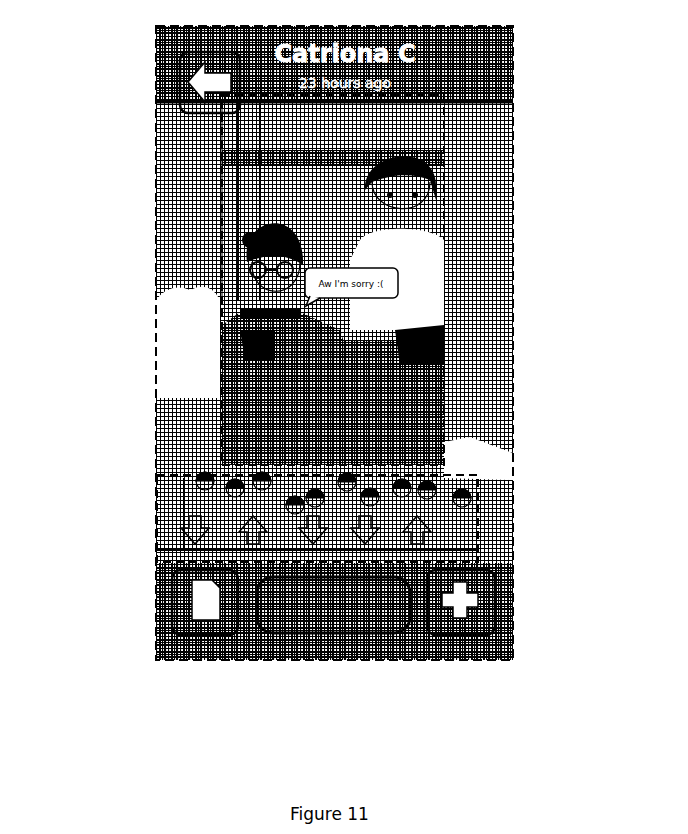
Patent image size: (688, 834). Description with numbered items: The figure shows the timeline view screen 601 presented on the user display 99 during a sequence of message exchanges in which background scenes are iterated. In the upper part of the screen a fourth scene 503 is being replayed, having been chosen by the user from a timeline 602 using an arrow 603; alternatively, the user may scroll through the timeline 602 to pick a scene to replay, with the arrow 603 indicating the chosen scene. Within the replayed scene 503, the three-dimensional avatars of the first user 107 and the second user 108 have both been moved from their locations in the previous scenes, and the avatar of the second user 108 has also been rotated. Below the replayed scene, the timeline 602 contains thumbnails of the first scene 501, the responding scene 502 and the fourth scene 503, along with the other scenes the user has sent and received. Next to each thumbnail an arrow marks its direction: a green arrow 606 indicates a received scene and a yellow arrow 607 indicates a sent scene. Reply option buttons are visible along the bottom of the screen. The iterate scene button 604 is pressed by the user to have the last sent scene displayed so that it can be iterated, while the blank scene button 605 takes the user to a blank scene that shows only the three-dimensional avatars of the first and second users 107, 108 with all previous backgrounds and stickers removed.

The user display 99 is at (531, 83).
The timeline view screen 601 is at (153, 162).
The first user 107 is at (413, 219).
The second user 108 is at (247, 281).
The fourth scene 503 is at (444, 322).
The first scene 501 is at (153, 483).
The responding scene 502 is at (155, 497).
The green arrow 606 is at (155, 538).
The timeline 602 is at (345, 510).
The yellow arrow 607 is at (247, 548).
The blank scene button 605 is at (158, 610).
The arrow 603 is at (342, 563).
The iterate scene button 604 is at (510, 611).